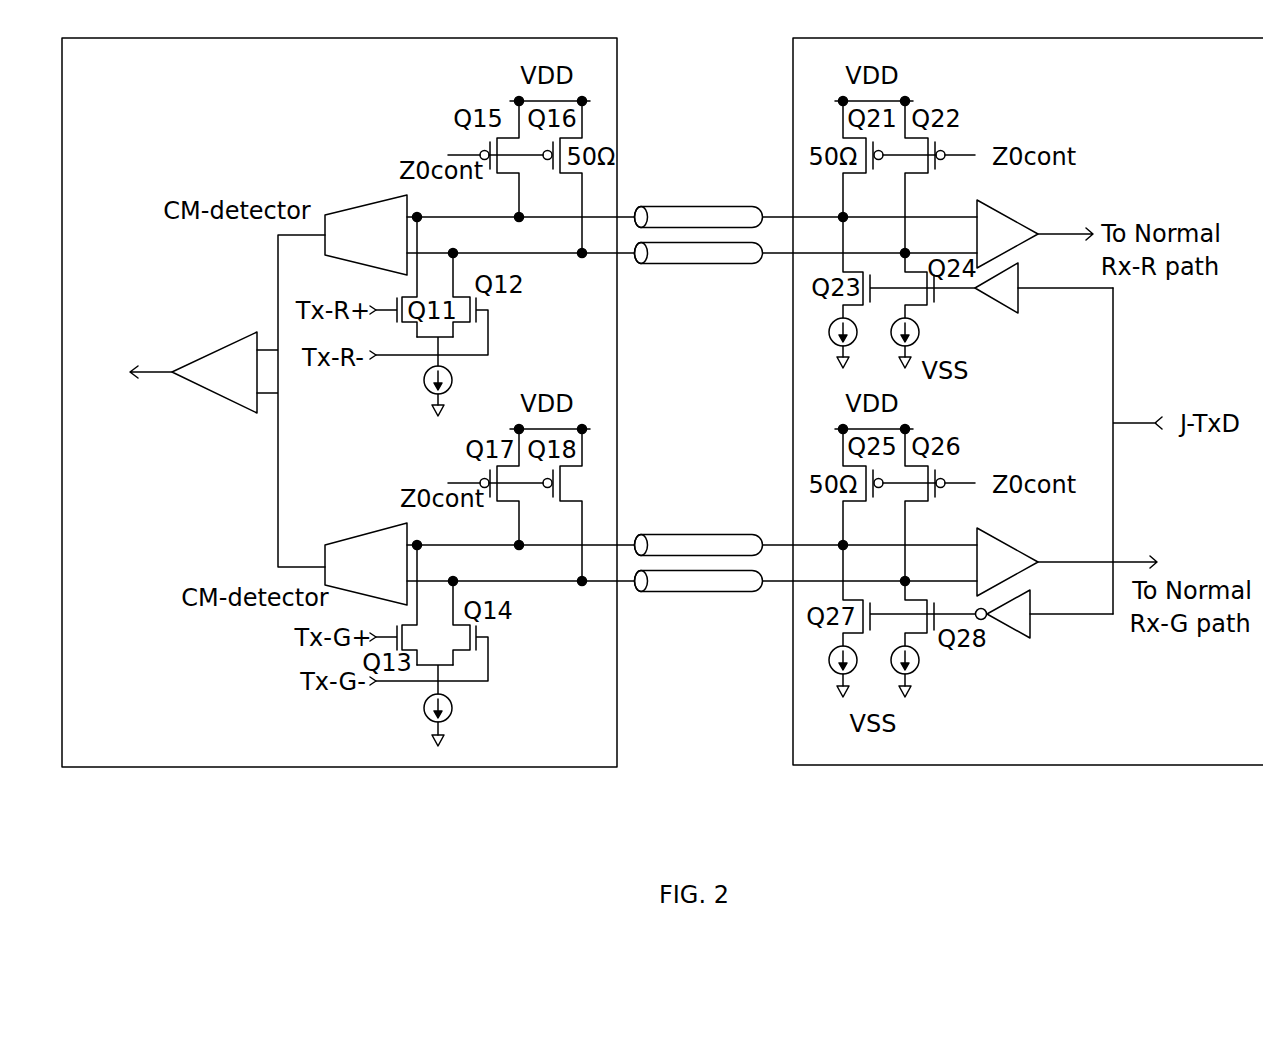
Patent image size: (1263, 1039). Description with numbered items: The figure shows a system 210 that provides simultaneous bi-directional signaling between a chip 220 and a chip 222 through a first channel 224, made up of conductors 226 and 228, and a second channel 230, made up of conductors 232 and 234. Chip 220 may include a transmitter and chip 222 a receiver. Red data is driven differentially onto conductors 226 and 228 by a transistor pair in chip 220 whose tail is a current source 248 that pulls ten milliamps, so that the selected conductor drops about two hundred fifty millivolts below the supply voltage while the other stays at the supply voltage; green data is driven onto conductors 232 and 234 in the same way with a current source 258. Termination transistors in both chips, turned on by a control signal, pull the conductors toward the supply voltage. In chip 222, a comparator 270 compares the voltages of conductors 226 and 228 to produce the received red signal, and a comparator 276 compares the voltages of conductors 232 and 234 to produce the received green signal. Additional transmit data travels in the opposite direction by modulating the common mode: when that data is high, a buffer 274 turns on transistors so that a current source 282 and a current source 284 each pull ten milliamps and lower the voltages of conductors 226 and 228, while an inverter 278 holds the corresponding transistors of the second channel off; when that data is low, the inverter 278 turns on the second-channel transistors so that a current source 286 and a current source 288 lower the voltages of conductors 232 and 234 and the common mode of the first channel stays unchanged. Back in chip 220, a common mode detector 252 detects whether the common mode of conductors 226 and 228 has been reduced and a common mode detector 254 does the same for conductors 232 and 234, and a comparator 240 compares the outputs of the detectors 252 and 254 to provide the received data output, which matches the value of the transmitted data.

The system 210 is at (250, 842).
The chip 220 is at (106, 92).
The chip 222 is at (1208, 92).
The first channel 224 is at (682, 103).
The conductor 226 is at (668, 205).
The conductor 228 is at (668, 264).
The second channel 230 is at (677, 702).
The conductor 232 is at (667, 534).
The conductor 234 is at (666, 593).
The comparator 240 is at (214, 394).
The current source 248 is at (424, 376).
The common mode detector 252 is at (358, 204).
The common mode detector 254 is at (360, 527).
The current source 258 is at (455, 718).
The comparator 270 is at (988, 207).
The buffer 274 is at (1022, 304).
The comparator 276 is at (1004, 537).
The inverter 278 is at (1010, 632).
The current source 282 is at (828, 334).
The current source 284 is at (921, 340).
The current source 286 is at (828, 660).
The current source 288 is at (921, 664).